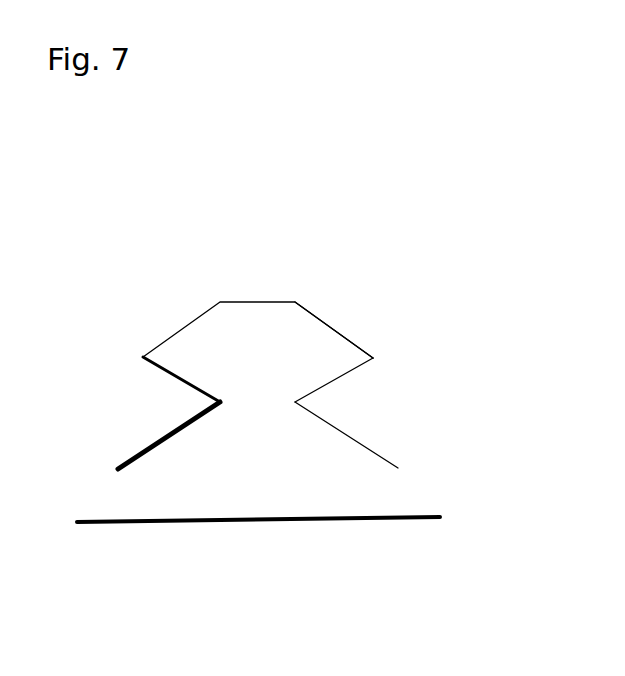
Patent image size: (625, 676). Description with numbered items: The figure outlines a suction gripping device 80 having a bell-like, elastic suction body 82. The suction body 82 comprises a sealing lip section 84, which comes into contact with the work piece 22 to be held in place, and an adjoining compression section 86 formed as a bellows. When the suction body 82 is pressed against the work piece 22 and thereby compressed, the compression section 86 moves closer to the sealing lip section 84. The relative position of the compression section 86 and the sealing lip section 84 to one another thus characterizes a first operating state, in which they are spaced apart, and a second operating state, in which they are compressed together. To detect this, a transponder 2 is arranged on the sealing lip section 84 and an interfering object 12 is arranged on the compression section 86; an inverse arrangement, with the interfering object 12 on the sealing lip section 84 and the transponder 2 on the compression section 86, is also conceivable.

The suction gripping device 80 is at (393, 285).
The suction body 82 is at (382, 368).
The compression section 86 is at (337, 380).
The sealing lip section 84 is at (370, 447).
The interfering object 12 is at (168, 379).
The transponder 2 is at (173, 435).
The work piece 22 is at (92, 527).